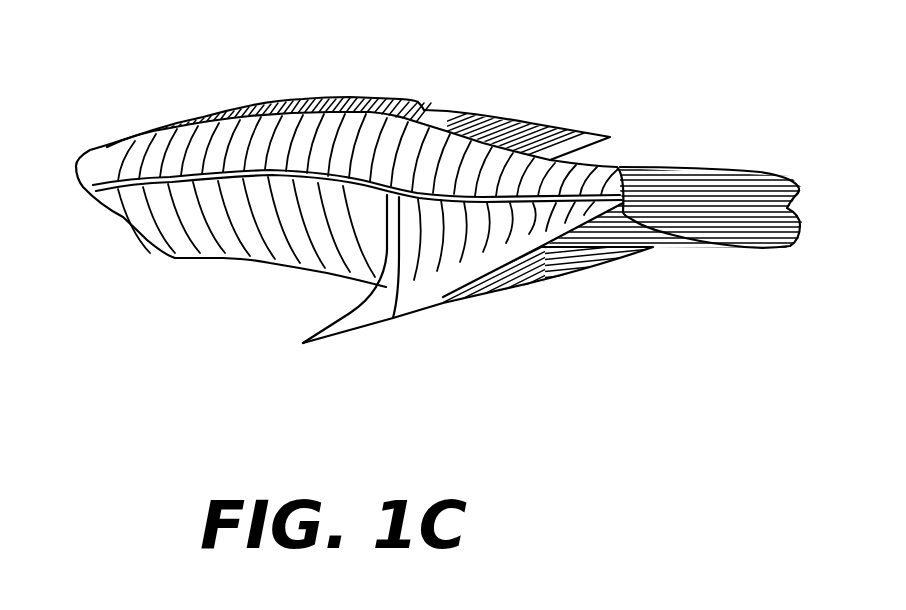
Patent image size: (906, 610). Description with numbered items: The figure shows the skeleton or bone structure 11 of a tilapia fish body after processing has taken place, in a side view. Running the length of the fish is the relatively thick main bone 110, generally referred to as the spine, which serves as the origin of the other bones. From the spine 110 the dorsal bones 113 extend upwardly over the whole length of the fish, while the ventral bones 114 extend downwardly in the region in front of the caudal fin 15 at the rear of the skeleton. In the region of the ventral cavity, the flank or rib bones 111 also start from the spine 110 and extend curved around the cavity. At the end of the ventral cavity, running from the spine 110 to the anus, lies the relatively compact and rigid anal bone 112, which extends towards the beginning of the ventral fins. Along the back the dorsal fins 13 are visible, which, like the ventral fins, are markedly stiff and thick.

The skeleton or bone structure 11 is at (463, 325).
The dorsal fins 13 is at (473, 120).
The caudal fin 15 is at (740, 230).
The main bone 110 is at (188, 175).
The flank or rib bones 111 is at (160, 213).
The anal bone 112 is at (385, 243).
The dorsal bones 113 is at (310, 130).
The ventral bones 114 is at (533, 218).